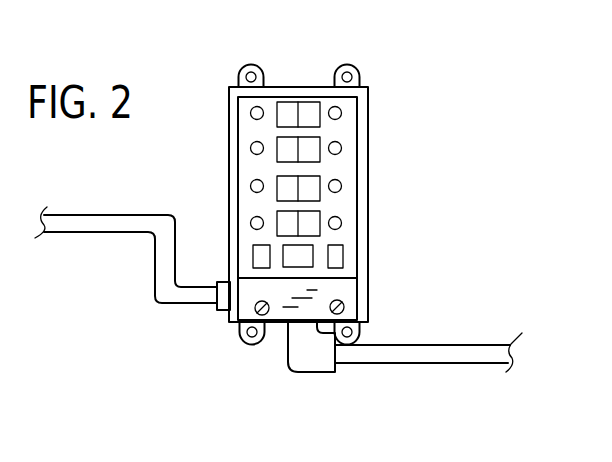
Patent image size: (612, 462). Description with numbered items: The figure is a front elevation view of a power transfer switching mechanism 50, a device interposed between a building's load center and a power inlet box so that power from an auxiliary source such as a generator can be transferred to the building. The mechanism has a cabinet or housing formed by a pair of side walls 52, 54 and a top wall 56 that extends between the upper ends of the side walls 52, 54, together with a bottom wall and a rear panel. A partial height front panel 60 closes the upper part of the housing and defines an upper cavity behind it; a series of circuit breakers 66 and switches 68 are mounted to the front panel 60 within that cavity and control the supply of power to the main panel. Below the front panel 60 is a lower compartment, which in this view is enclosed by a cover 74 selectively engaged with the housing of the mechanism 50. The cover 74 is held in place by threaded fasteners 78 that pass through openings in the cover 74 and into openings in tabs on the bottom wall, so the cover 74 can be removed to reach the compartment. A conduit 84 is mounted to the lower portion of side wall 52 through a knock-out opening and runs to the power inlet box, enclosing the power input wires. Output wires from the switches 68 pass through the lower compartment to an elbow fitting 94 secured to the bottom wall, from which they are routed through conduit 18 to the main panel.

The conduit 18 is at (430, 365).
The power transfer switching mechanism 50 is at (329, 200).
The side wall 52 is at (227, 110).
The side wall 54 is at (368, 120).
The top wall 56 is at (297, 87).
The front panel 60 is at (345, 167).
The circuit breakers 66 is at (342, 191).
The switches 68 is at (283, 212).
The cover 74 is at (350, 290).
The threaded fasteners 78 is at (344, 307).
The conduit 84 is at (95, 233).
The elbow fitting 94 is at (288, 360).